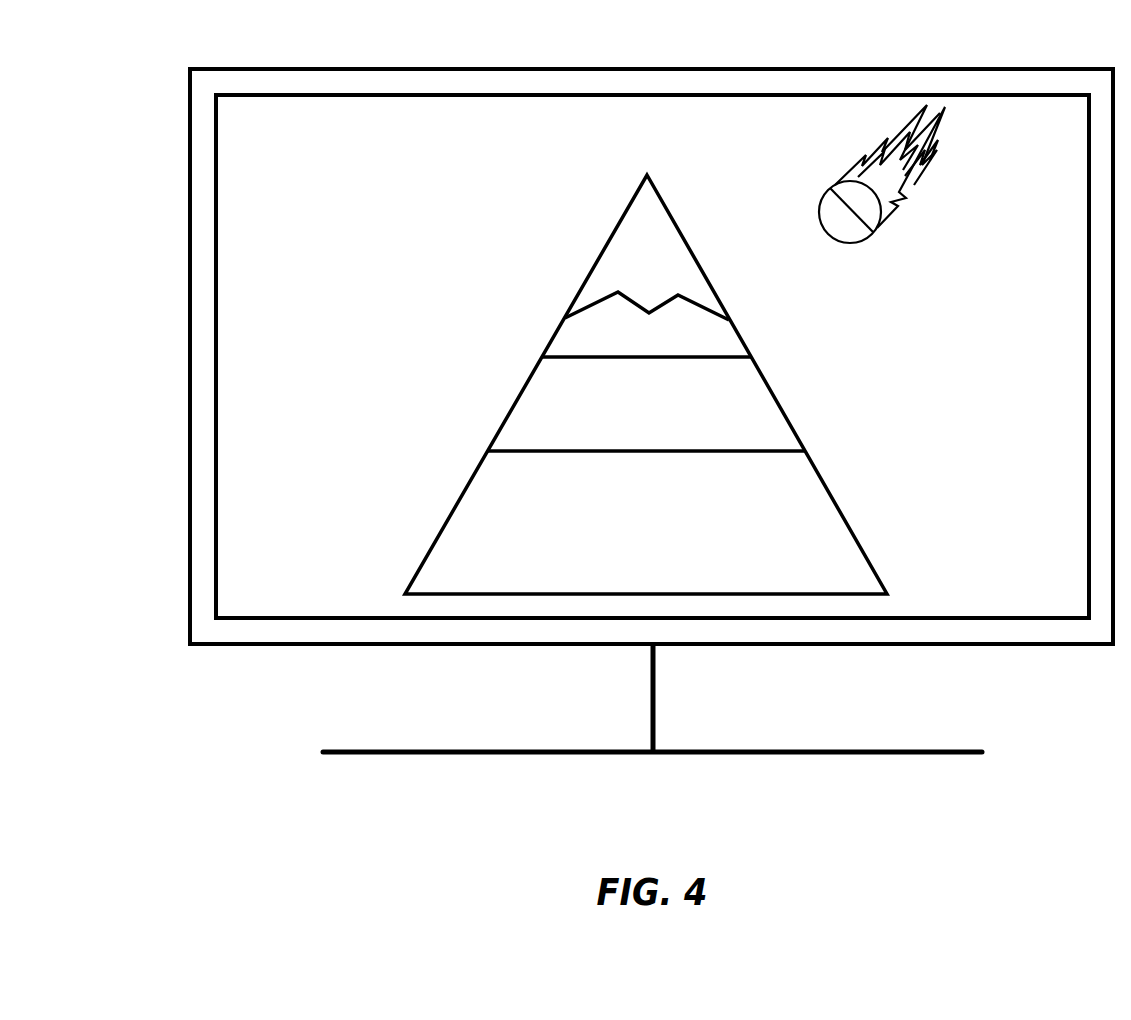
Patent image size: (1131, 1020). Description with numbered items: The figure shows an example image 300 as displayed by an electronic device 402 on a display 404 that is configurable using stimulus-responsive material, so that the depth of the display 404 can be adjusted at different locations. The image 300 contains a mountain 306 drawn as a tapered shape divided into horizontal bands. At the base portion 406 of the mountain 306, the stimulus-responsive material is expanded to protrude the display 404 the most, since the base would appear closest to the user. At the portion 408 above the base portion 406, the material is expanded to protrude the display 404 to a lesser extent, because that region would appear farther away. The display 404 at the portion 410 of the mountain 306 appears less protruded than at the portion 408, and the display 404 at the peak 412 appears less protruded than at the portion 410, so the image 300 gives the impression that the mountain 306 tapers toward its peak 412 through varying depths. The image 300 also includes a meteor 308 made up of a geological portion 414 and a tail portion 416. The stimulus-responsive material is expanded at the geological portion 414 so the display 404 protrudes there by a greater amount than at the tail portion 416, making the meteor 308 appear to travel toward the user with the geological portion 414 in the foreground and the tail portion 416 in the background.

The image 300 is at (589, 384).
The mountain 306 is at (805, 450).
The meteor 308 is at (875, 204).
The electronic device 402 is at (282, 645).
The display 404 is at (398, 95).
The base portion 406 is at (830, 530).
The portion 408 is at (762, 398).
The portion 410 is at (725, 337).
The peak 412 is at (672, 245).
The geological portion 414 is at (828, 207).
The tail portion 416 is at (888, 197).